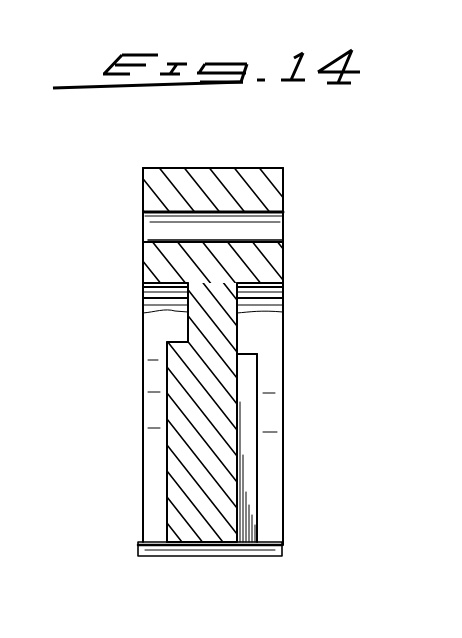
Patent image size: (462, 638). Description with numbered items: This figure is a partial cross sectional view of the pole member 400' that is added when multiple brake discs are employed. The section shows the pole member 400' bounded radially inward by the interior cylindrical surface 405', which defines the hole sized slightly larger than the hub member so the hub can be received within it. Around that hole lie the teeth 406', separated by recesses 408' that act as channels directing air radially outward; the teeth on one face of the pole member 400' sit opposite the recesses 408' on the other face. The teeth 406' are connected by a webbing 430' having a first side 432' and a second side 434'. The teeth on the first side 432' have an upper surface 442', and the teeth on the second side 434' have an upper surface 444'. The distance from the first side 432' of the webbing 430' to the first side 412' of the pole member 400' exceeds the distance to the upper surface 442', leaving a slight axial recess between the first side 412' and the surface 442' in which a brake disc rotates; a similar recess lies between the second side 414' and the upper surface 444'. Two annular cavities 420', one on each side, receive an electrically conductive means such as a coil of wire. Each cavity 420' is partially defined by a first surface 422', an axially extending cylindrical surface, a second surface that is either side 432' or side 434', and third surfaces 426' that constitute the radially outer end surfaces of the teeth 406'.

The pole member 400' is at (226, 178).
The interior cylindrical surface 405' is at (248, 539).
The teeth 406' is at (189, 411).
The recesses 408' is at (308, 448).
The first side 412' is at (116, 326).
The second side 414' is at (300, 353).
The annular cavities 420' is at (248, 356).
The first surface 422' is at (219, 256).
The third surfaces 426' is at (213, 388).
The webbing 430' is at (291, 325).
The first side of webbing 432' is at (133, 310).
The second side of webbing 434' is at (297, 281).
The upper surface 442' is at (122, 491).
The upper surface 444' is at (296, 472).